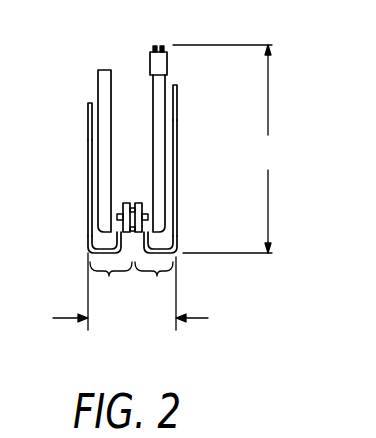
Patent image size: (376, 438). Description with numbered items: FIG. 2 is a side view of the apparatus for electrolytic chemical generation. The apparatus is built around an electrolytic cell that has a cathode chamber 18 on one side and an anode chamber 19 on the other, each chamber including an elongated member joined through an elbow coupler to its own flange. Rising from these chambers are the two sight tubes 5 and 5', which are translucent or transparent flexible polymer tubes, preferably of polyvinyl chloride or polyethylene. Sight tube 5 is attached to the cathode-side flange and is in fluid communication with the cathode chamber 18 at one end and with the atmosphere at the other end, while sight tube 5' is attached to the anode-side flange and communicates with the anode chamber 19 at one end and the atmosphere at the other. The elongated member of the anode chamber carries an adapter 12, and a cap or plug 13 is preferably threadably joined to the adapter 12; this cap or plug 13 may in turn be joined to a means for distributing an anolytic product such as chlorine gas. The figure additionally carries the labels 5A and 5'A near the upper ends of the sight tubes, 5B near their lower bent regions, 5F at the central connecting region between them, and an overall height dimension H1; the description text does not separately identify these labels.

The sight tube 5 is at (61, 177).
The electrode tip 5A is at (88, 103).
The sight tube 5' is at (203, 168).
The electrode tip 5'A is at (217, 98).
The bent bottom portion of electrode 5B is at (90, 258).
The connecting portion 5F is at (158, 229).
The adapter 12 is at (149, 73).
The cap or plug 13 is at (168, 62).
The cathode chamber 18 is at (111, 286).
The anode chamber 19 is at (156, 286).
The height dimension H1 is at (232, 149).